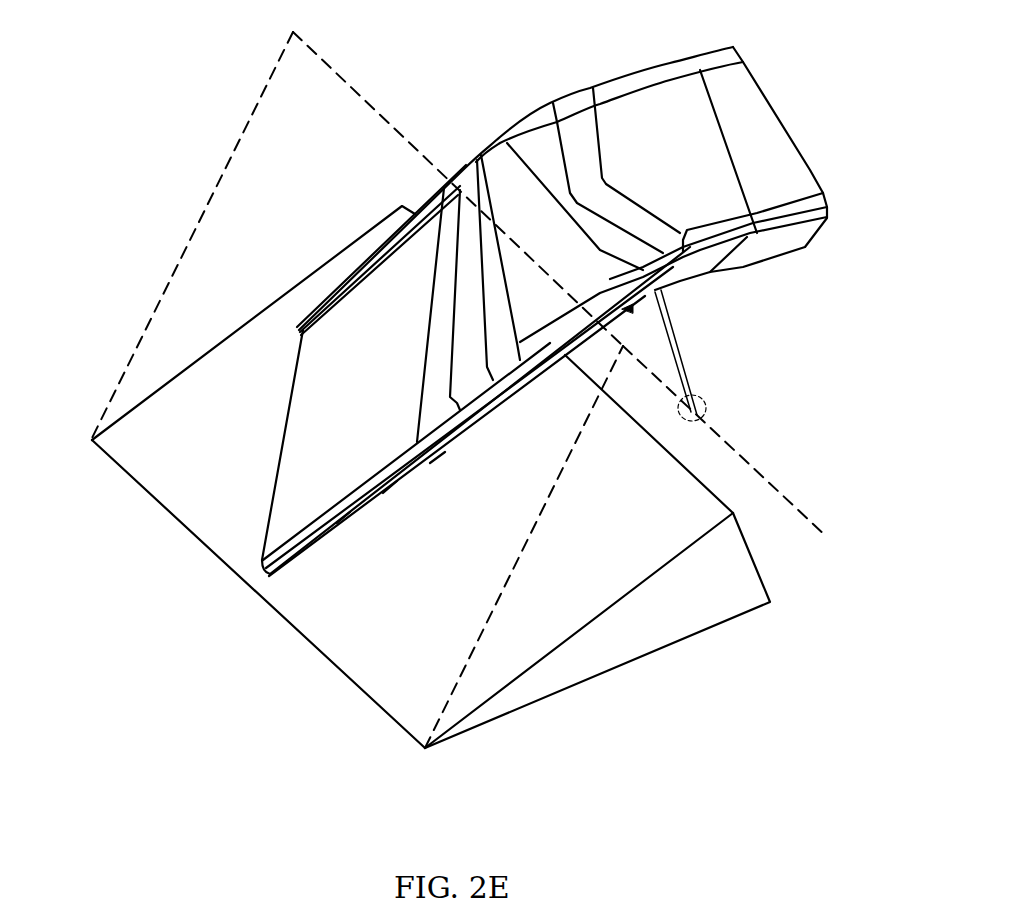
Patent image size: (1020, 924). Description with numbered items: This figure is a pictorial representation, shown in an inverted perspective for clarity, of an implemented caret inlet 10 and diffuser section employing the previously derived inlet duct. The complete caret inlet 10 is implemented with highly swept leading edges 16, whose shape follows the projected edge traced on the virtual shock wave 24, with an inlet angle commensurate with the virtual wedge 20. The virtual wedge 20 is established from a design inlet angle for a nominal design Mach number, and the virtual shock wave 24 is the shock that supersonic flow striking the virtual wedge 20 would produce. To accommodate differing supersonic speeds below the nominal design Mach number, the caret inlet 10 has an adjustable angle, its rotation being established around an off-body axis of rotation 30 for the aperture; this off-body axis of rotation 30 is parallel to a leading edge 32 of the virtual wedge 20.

The caret inlet 10 is at (527, 120).
The leading edges 16 is at (297, 367).
The virtual wedge 20 is at (688, 613).
The virtual shock wave 24 is at (281, 58).
The off-body axis of rotation 30 is at (733, 450).
The leading edge of the virtual wedge 32 is at (322, 655).